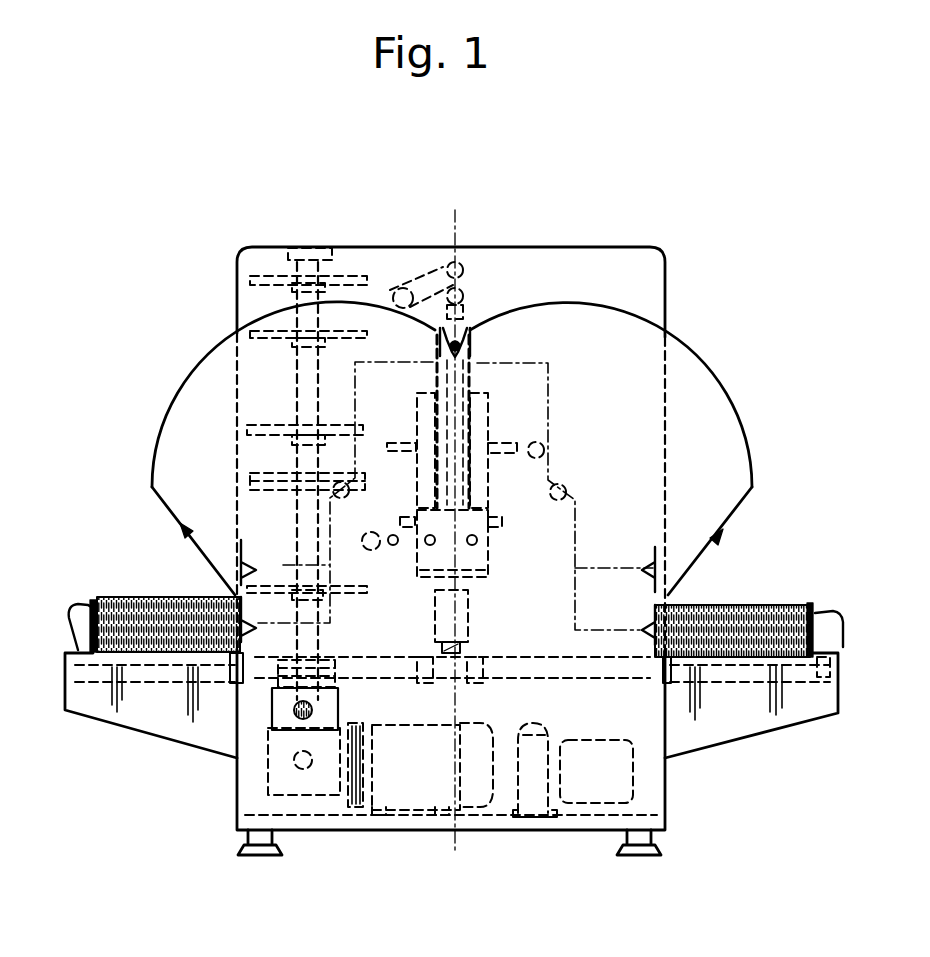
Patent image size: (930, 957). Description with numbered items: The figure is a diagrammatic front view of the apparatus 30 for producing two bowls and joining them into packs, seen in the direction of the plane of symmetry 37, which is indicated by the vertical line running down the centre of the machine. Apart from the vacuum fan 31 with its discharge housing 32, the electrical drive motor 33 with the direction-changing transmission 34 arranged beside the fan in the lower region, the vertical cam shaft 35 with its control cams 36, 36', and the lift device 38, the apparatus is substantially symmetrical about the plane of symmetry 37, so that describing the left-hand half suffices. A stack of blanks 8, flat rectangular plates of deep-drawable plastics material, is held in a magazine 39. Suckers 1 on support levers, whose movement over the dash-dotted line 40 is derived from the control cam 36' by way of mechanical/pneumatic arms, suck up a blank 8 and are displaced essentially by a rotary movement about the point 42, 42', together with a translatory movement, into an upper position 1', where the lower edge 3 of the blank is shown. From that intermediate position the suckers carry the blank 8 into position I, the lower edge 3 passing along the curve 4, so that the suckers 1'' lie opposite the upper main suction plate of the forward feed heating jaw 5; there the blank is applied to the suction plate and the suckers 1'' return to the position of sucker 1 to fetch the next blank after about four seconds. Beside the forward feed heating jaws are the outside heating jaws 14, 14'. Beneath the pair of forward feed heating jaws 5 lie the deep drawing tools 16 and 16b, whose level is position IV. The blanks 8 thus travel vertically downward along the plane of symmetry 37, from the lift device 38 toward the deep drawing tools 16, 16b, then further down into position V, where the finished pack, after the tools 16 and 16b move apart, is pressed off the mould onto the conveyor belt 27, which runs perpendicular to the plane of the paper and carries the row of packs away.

The suckers 1 is at (451, 658).
The upper position of the suckers 1' is at (202, 591).
The suckers in position I 1'' is at (426, 335).
The lower edge of the blank 3 is at (717, 597).
The curve 4 is at (150, 447).
The forward feed heating jaw 5 is at (463, 470).
The blanks 8 is at (97, 593).
The outside heating jaws 14 is at (403, 421).
The right spindle housing 14' is at (503, 421).
The deep drawing tool 16 is at (422, 572).
The deep drawing tool 16b is at (473, 567).
The conveyor belt 27 is at (452, 650).
The machine 30 is at (668, 295).
The vacuum fan 31 is at (593, 790).
The discharge housing 32 is at (532, 802).
The electrical drive motor 33 is at (403, 768).
The direction-changing transmission 34 is at (322, 785).
The vertical cam shaft 35 is at (297, 386).
The control cam 36 is at (268, 330).
The control cam 36' is at (268, 270).
The plane of symmetry 37 is at (456, 240).
The lift device 38 is at (407, 270).
The magazine 39 is at (68, 655).
The dash-dotted line 40 is at (353, 399).
The point 42 is at (345, 492).
The point 42' is at (565, 496).
The upper position I is at (468, 331).
The position IV is at (478, 547).
The position V is at (460, 628).